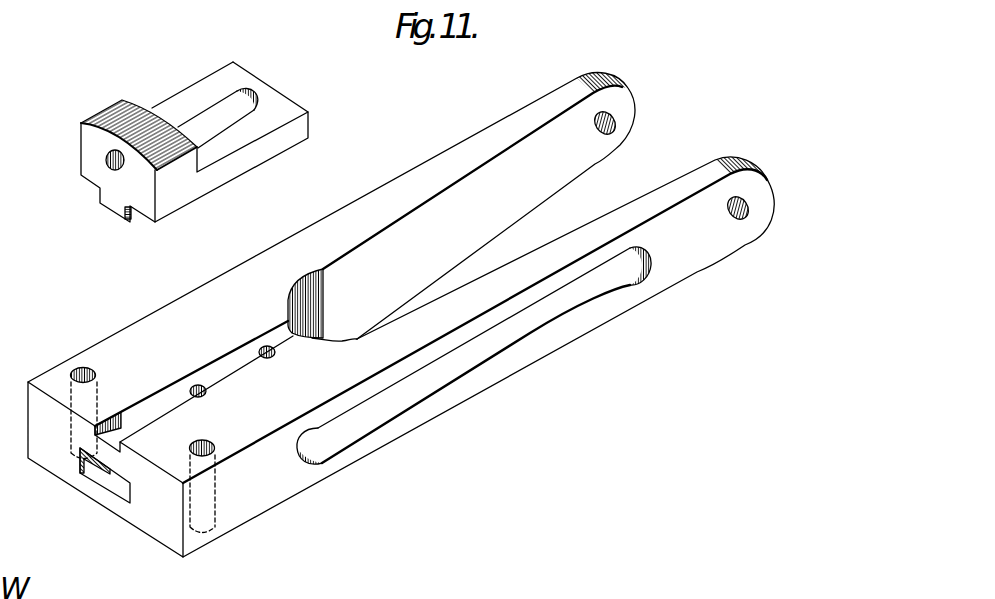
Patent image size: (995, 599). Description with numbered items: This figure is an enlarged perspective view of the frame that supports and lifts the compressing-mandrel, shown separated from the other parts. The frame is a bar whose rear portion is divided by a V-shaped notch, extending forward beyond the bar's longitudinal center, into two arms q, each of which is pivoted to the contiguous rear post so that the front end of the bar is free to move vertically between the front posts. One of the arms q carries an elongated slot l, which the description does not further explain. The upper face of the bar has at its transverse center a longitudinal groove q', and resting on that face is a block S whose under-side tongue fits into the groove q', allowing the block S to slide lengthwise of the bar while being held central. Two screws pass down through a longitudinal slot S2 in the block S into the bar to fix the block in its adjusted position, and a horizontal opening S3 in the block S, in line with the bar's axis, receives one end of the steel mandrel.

The arms q is at (401, 315).
The longitudinal groove q' is at (160, 439).
The slot l is at (474, 355).
The block S is at (127, 208).
The longitudinal slot S2 is at (215, 114).
The opening S3 is at (106, 162).